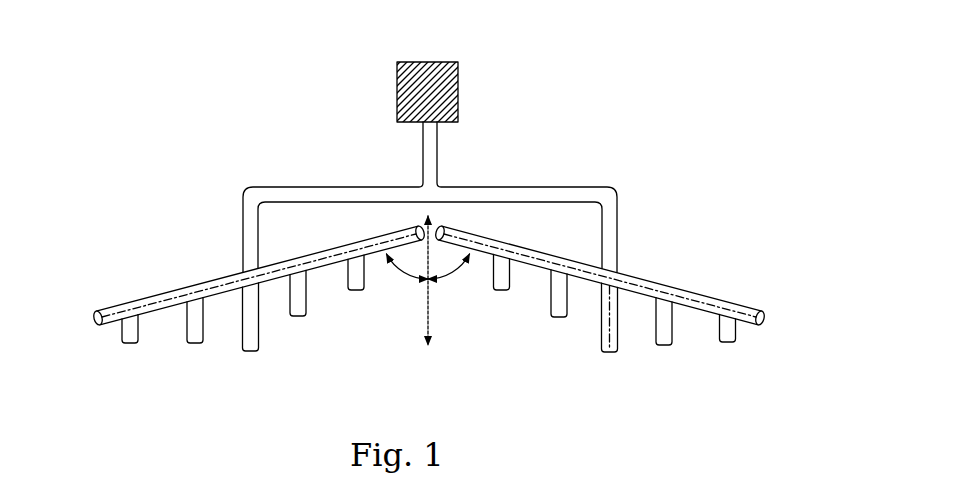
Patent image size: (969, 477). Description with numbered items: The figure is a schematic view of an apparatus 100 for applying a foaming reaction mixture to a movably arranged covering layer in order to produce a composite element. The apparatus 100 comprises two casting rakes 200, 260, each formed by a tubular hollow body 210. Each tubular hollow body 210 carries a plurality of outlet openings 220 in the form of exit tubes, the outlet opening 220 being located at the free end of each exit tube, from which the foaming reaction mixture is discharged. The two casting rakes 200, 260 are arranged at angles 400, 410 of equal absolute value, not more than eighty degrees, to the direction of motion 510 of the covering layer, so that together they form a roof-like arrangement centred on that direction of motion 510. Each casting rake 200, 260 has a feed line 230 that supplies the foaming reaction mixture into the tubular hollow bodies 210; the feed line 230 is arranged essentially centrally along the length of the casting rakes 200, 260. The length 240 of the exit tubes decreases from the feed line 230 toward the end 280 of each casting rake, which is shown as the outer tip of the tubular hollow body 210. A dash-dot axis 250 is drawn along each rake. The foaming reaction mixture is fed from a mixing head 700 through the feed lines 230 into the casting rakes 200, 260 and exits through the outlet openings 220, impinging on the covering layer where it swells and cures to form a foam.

The apparatus 100 is at (540, 93).
The casting rake 200 is at (677, 281).
The tubular hollow body 210 is at (411, 246).
The outlet openings 220 is at (195, 346).
The feed line 230 is at (285, 187).
The length of the exit tubes 240 is at (510, 283).
The boom longitudinal axis 250 is at (155, 293).
The casting rake 260 is at (207, 274).
The end of the casting rakes 280 is at (97, 324).
The angle 400 is at (436, 281).
The angle 410 is at (415, 280).
The direction of motion 510 is at (428, 316).
The mixing head 700 is at (397, 78).